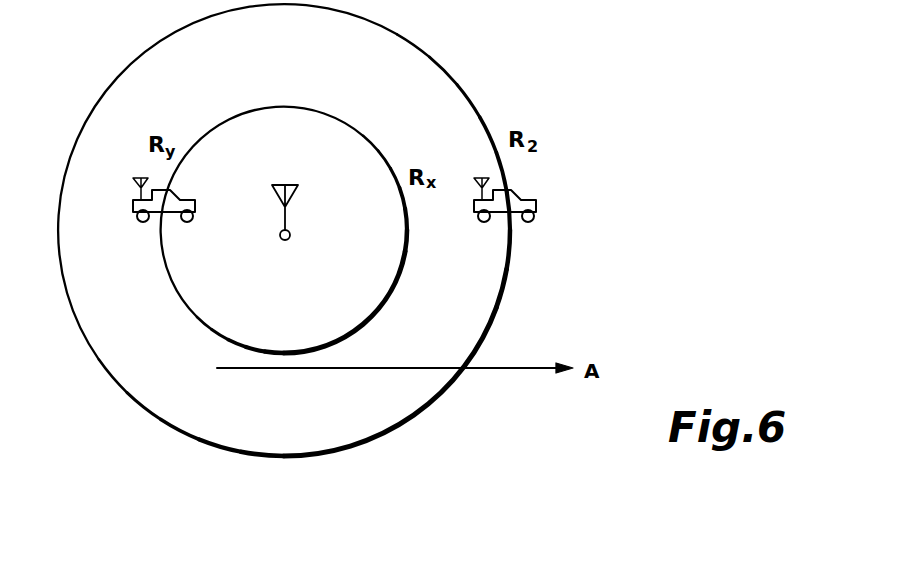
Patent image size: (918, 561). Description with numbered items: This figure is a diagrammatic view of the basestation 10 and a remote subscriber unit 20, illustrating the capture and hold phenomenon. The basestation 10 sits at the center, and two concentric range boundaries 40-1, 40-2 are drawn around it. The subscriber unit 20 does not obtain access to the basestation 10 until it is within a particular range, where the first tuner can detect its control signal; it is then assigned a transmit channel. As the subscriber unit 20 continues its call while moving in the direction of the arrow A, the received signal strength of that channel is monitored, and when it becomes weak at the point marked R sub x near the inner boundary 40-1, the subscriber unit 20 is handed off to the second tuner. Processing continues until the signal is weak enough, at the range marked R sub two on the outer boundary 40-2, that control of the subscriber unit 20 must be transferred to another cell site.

The basestation 10 is at (333, 181).
The subscriber unit 20 is at (196, 199).
The first coverage zone boundary 40-1 is at (299, 108).
The second coverage zone boundary 40-2 is at (452, 77).